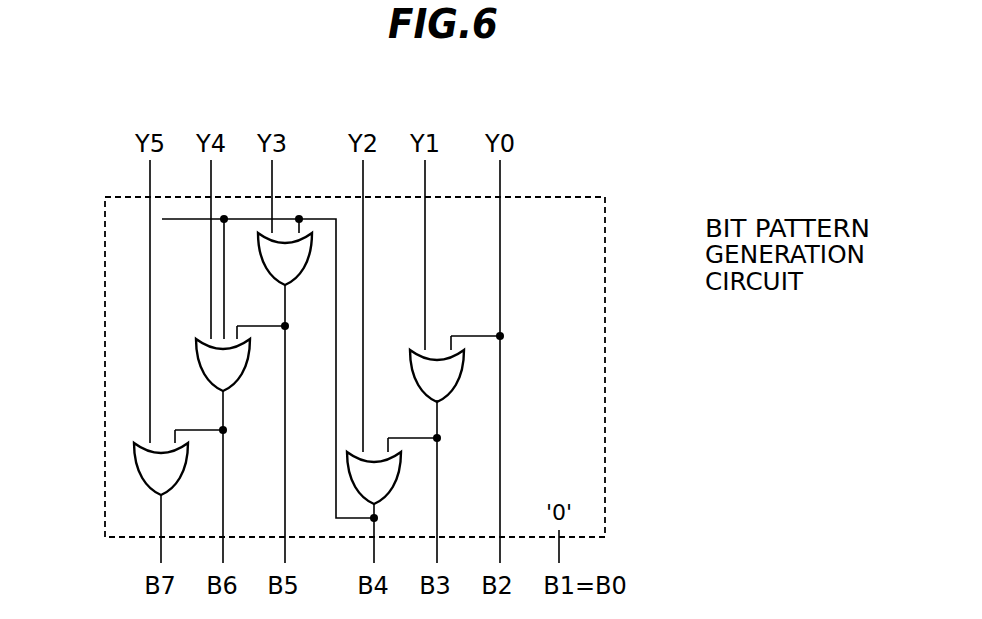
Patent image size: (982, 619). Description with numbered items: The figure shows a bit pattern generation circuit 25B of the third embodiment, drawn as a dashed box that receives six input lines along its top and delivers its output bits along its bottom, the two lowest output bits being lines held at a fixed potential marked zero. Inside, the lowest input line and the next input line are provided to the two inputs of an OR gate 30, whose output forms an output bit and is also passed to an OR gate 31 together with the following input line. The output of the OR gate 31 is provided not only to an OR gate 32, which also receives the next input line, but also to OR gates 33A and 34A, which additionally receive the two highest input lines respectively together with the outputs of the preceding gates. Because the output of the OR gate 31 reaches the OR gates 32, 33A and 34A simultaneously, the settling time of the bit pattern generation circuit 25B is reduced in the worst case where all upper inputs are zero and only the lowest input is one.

The bit pattern generation circuit 25B is at (605, 235).
The OR gate 30 is at (417, 368).
The OR gate 31 is at (390, 476).
The OR gate 32 is at (272, 258).
The OR gate 33A is at (207, 370).
The OR gate 34A is at (145, 469).